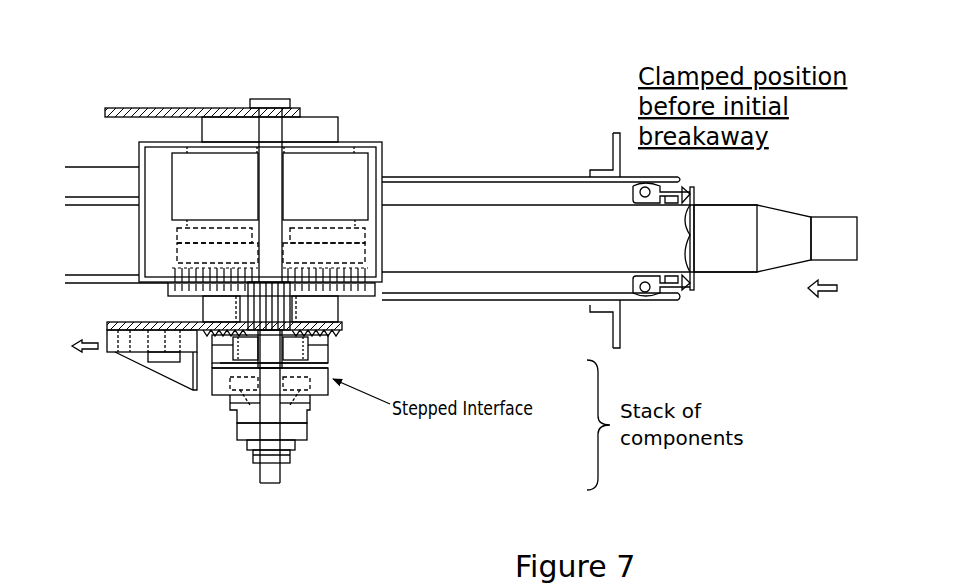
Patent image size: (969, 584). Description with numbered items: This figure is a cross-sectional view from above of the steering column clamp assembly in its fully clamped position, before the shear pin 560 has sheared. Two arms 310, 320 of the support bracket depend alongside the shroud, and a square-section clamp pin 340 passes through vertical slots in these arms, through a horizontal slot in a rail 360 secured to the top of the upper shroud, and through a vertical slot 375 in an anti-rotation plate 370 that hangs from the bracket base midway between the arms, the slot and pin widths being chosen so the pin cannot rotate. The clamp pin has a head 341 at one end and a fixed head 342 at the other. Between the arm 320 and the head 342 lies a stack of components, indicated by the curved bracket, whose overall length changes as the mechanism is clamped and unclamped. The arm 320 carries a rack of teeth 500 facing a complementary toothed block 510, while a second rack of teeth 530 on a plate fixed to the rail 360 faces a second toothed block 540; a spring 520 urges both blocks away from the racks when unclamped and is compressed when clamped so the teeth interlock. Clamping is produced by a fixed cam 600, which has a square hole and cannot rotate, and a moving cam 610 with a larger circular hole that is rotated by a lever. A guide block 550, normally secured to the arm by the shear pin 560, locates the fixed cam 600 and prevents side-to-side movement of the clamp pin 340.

The arm 310 is at (187, 104).
The head 341 is at (279, 98).
The clamp pin 340 is at (278, 180).
The head 342 is at (288, 456).
The rail 360 is at (382, 153).
The anti-rotation plate 370 is at (372, 233).
The vertical slot 375 is at (250, 238).
The spring 520 is at (250, 260).
The second rack of teeth 530 is at (365, 301).
The second toothed block 540 is at (395, 327).
The arm 320 is at (125, 322).
The shear pin 560 is at (167, 327).
The guide block 550 is at (178, 393).
The rack of teeth 500 is at (324, 338).
The toothed block 510 is at (333, 354).
The fixed cam 600 is at (336, 398).
The moving cam 610 is at (320, 410).